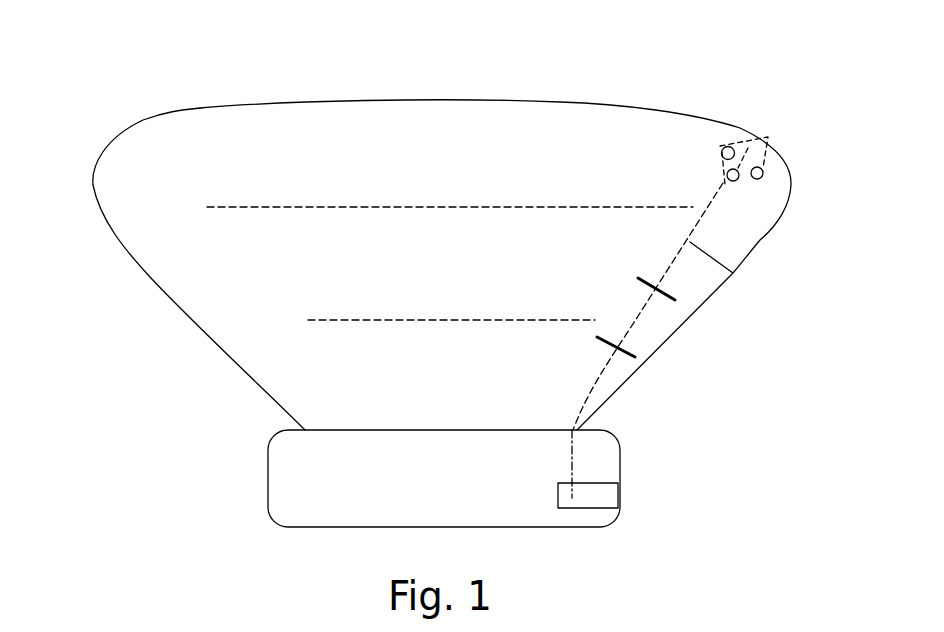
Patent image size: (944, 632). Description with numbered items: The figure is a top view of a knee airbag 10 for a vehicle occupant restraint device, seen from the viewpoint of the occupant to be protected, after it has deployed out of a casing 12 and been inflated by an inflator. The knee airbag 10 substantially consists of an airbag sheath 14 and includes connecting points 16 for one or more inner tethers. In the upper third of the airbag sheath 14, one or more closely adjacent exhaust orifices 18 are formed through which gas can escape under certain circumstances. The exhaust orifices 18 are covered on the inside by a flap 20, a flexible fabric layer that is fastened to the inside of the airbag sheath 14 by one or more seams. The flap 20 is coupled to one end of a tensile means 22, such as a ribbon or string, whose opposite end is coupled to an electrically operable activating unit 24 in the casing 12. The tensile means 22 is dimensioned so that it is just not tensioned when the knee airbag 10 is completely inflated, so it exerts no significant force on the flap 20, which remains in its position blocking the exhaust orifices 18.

The knee airbag 10 is at (148, 77).
The casing 12 is at (288, 475).
The airbag sheath 14 is at (168, 268).
The connecting points 16 is at (450, 320).
The exhaust orifices 18 is at (723, 145).
The flap 20 is at (763, 137).
The tensile means 22 is at (733, 273).
The activating unit 24 is at (595, 497).